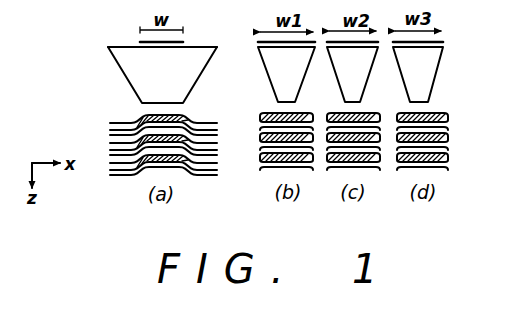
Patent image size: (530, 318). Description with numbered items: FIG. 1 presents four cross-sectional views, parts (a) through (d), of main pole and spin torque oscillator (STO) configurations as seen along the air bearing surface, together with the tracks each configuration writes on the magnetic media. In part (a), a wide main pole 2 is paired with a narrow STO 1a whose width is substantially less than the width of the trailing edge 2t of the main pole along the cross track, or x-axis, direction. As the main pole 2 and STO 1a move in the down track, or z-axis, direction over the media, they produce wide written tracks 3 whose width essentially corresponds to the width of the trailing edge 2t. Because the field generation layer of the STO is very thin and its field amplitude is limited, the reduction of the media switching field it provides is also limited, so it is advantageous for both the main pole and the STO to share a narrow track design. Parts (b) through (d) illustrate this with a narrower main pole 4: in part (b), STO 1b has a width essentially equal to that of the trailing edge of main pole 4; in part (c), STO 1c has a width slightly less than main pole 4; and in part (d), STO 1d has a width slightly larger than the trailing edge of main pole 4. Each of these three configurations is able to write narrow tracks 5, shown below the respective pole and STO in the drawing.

The spin torque oscillator 1a is at (140, 42).
The spin torque oscillator 1b is at (258, 42).
The spin torque oscillator 1c is at (331, 41).
The spin torque oscillator 1d is at (442, 40).
The main pole 2 is at (127, 71).
The trailing edge 2t is at (114, 46).
The wide written tracks 3 is at (114, 130).
The main pole 4 is at (270, 66).
The narrow tracks 5 is at (262, 119).